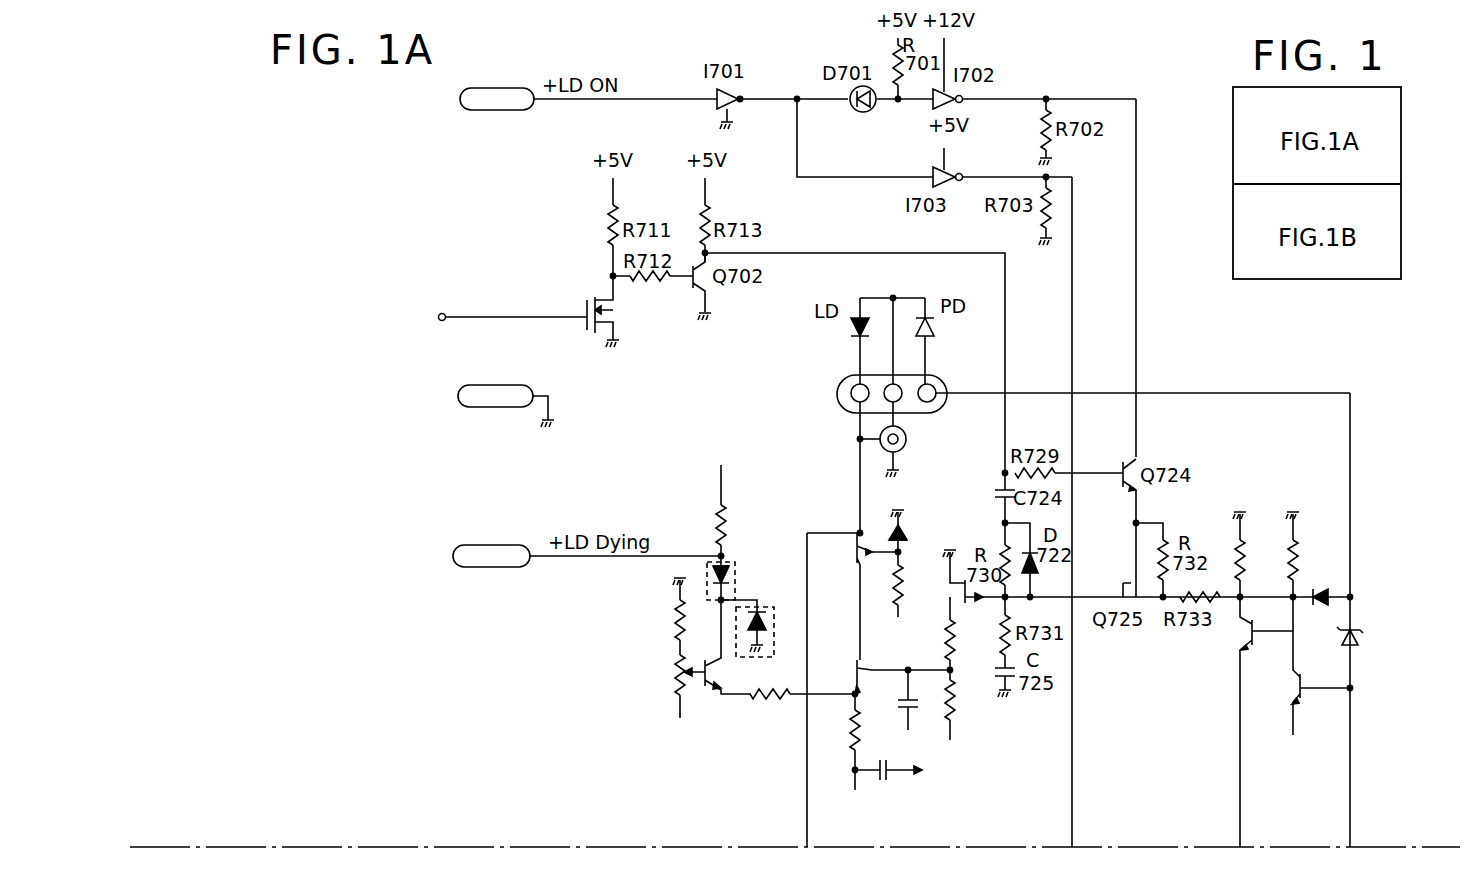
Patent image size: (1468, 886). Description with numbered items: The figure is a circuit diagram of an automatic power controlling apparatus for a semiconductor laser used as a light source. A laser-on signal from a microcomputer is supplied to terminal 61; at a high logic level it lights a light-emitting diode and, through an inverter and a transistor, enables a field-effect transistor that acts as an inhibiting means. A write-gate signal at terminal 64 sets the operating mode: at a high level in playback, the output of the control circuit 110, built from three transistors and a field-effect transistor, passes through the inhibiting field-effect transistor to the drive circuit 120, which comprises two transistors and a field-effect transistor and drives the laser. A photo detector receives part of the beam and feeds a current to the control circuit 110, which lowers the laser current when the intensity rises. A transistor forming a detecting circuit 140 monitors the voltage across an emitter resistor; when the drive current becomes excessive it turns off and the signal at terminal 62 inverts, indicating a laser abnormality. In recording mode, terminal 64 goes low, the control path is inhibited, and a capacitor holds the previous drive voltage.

The terminal 61 is at (510, 88).
The terminal 62 is at (506, 545).
The terminal 64 is at (446, 322).
The control circuit 110 is at (1380, 577).
The drive circuit 120 is at (931, 755).
The detecting circuit 140 is at (704, 699).